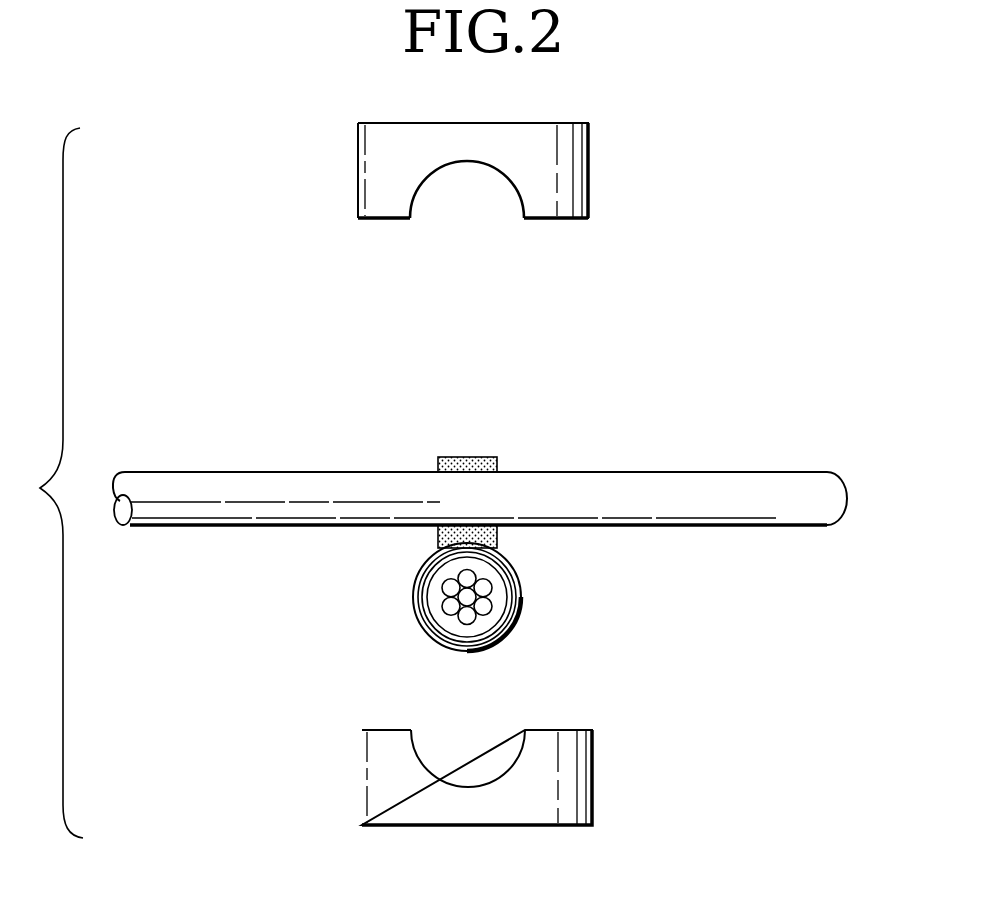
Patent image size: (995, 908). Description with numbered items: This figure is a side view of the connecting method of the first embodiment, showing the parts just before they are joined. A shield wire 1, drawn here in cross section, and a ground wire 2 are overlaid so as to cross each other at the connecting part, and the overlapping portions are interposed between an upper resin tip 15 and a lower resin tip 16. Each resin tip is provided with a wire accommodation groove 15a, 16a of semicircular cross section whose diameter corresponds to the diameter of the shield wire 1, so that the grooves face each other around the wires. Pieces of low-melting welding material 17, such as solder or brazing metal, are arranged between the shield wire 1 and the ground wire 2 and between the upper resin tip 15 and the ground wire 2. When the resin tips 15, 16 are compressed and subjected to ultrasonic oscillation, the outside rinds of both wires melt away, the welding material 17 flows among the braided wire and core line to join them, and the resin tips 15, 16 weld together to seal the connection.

The shield wire 1 is at (413, 612).
The ground wire 2 is at (767, 483).
The upper resin tip 15 is at (567, 170).
The wire accommodation groove 15a is at (480, 165).
The lower resin tip 16 is at (592, 787).
The wire accommodation groove 16a is at (463, 770).
The low-melting welding material 17 is at (473, 458).